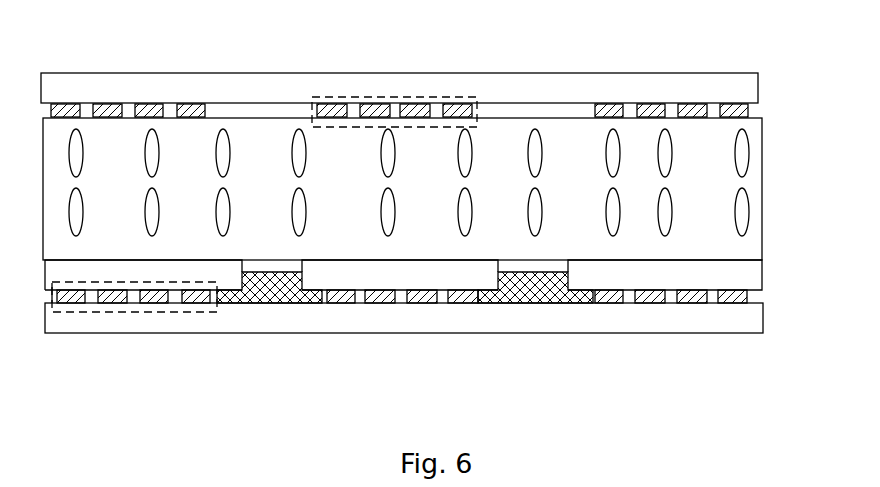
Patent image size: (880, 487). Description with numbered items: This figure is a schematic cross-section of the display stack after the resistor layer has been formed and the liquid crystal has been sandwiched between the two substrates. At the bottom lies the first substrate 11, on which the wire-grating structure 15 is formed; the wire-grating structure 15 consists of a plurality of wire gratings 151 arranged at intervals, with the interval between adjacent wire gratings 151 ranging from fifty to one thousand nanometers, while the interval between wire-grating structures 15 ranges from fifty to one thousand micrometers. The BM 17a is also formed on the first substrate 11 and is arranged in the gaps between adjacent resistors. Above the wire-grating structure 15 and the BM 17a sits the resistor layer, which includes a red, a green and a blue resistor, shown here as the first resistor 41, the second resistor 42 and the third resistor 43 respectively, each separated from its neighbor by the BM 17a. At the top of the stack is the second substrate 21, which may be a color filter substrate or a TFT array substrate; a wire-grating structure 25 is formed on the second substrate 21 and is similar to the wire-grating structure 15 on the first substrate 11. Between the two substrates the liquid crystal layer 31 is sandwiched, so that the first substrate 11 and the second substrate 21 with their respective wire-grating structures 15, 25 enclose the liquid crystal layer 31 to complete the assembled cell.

The second substrate 21 is at (643, 95).
The wire-grating structure 25 is at (447, 95).
The liquid crystal layer 31 is at (753, 242).
The first resistor 41 is at (224, 268).
The second resistor 42 is at (395, 270).
The third resistor 43 is at (653, 273).
The BM 17a is at (273, 280).
The wire-grating structure 15 is at (187, 312).
The wire gratings 151 is at (72, 295).
The first substrate 11 is at (467, 325).